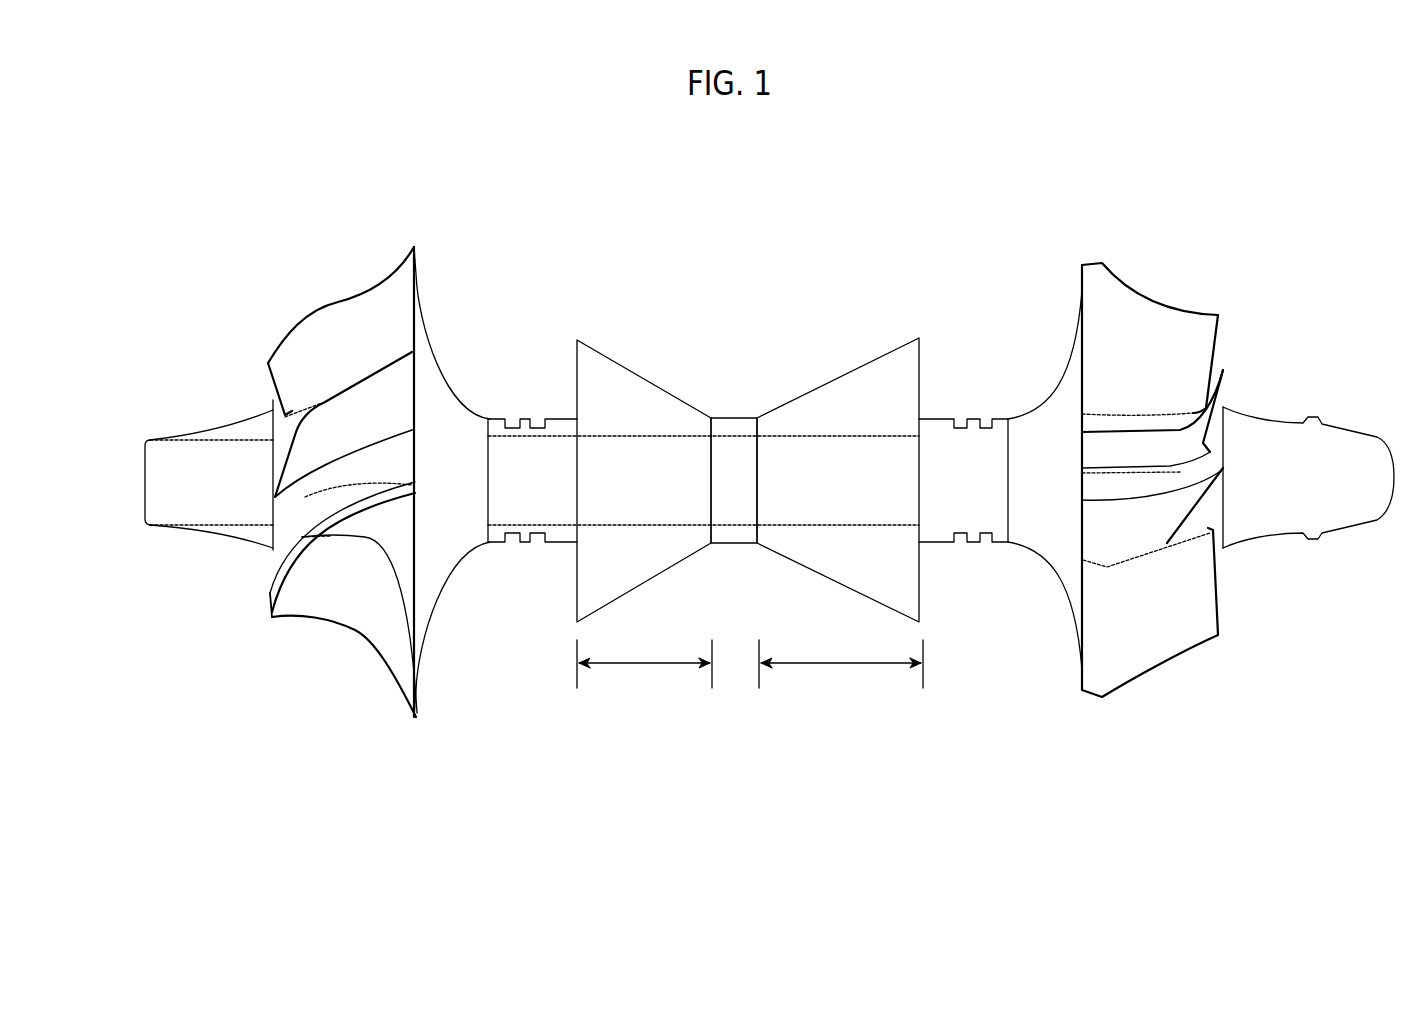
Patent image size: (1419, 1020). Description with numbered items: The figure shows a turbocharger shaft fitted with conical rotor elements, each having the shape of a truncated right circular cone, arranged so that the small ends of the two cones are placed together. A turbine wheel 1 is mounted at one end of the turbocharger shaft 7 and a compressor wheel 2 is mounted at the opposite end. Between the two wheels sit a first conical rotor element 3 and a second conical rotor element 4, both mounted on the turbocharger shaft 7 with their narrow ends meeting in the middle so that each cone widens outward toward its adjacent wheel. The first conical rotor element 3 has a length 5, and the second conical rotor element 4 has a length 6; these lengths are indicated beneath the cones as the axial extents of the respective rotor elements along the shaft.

The turbine wheel 1 is at (1149, 240).
The compressor wheel 2 is at (299, 295).
The first conical rotor element 3 is at (812, 348).
The second conical rotor element 4 is at (633, 348).
The length 5 is at (828, 717).
The length 6 is at (649, 717).
The turbocharger shaft 7 is at (219, 483).